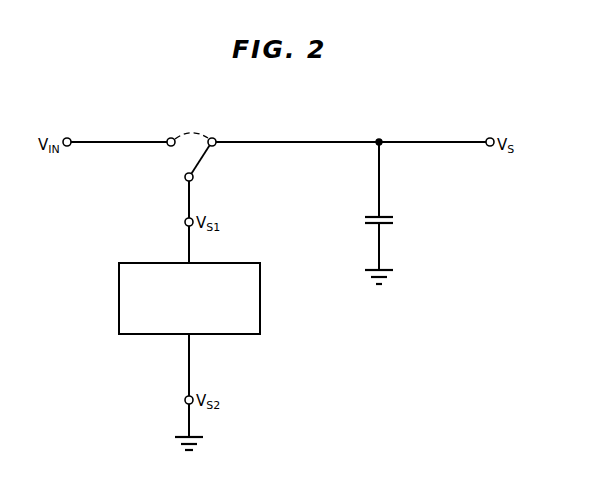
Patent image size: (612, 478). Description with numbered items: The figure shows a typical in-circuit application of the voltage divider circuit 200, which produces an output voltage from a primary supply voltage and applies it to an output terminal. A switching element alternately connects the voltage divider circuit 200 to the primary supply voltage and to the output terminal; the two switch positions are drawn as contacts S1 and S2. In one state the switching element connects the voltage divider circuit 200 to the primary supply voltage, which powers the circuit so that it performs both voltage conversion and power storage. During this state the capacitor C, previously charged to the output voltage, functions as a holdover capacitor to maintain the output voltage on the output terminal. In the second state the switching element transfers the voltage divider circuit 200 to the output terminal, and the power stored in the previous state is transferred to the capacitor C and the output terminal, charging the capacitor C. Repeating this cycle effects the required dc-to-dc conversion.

The voltage divider circuit 200 is at (262, 313).
The first switch terminal S1 is at (181, 132).
The second switch terminal S2 is at (208, 150).
The capacitor C is at (386, 213).